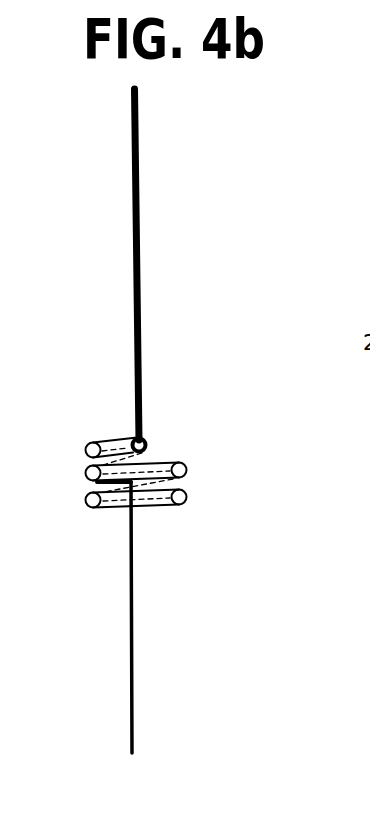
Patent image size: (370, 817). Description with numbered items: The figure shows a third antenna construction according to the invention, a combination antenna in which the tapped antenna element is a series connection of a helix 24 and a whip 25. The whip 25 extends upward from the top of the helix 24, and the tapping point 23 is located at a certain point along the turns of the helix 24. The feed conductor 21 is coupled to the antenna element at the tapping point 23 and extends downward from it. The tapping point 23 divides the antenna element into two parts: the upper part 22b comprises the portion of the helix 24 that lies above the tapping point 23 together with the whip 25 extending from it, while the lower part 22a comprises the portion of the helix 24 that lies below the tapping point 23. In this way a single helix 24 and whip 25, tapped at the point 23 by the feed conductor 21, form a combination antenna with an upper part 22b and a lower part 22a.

The feed conductor 21 is at (128, 622).
The lower part of the antenna element 22a is at (204, 483).
The upper part of the antenna element 22b is at (208, 80).
The tapping point 23 is at (87, 482).
The helix 24 is at (168, 468).
The whip 25 is at (131, 322).